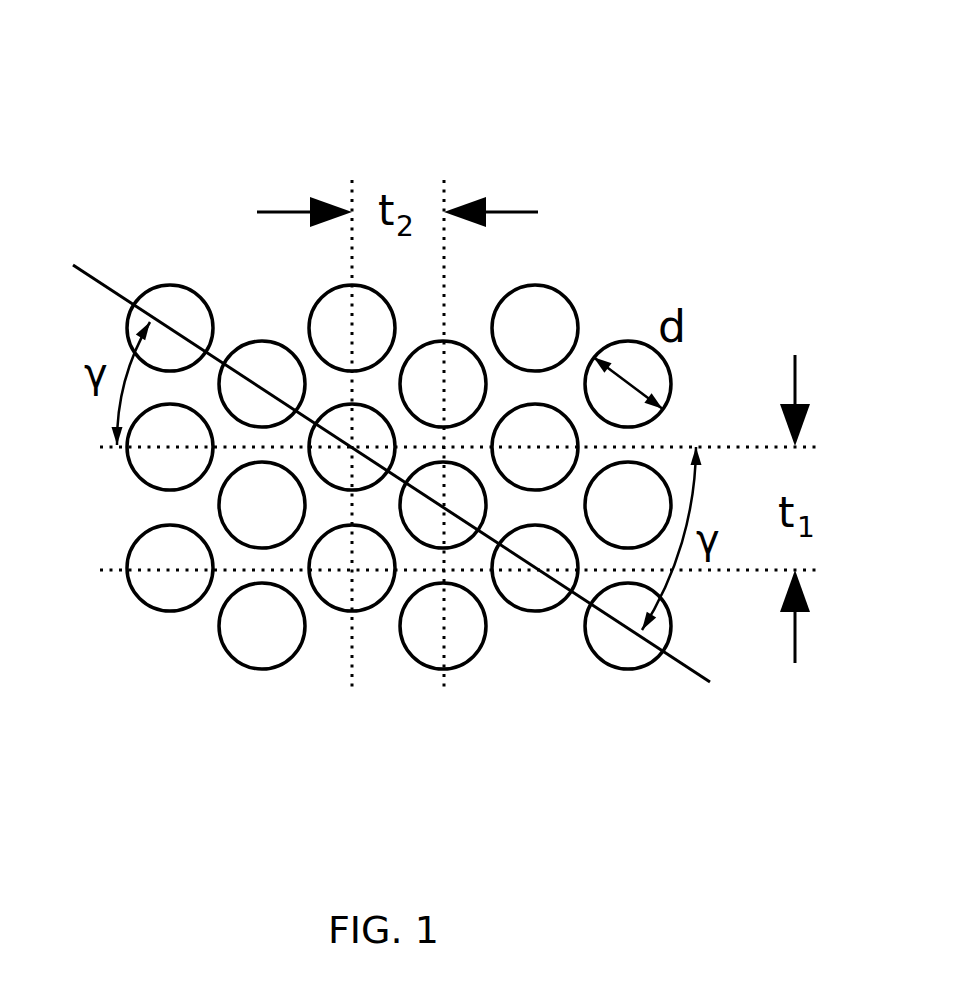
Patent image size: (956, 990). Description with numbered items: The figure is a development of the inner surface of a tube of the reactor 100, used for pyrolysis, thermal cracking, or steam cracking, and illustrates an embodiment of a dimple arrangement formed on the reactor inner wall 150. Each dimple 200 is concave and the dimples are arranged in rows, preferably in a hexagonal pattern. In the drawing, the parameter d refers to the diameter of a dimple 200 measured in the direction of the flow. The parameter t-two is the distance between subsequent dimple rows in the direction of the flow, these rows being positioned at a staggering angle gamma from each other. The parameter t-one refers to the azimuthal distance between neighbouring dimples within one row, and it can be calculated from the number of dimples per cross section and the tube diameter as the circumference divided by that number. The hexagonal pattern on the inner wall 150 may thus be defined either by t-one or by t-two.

The reactor 100 is at (390, 342).
The reactor inner wall 150 is at (116, 186).
The dimple 200 is at (565, 293).